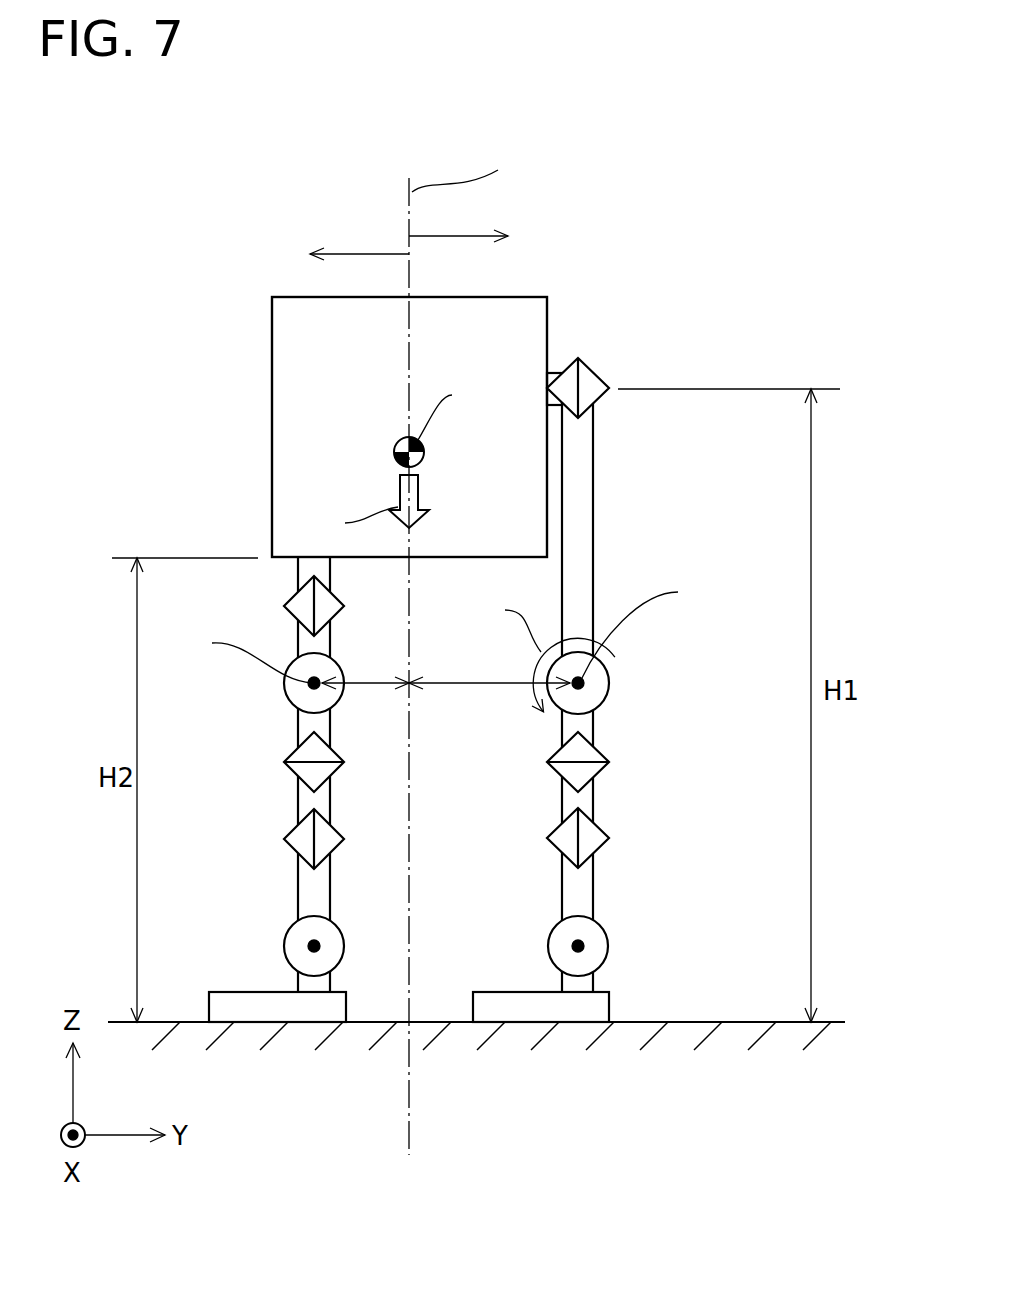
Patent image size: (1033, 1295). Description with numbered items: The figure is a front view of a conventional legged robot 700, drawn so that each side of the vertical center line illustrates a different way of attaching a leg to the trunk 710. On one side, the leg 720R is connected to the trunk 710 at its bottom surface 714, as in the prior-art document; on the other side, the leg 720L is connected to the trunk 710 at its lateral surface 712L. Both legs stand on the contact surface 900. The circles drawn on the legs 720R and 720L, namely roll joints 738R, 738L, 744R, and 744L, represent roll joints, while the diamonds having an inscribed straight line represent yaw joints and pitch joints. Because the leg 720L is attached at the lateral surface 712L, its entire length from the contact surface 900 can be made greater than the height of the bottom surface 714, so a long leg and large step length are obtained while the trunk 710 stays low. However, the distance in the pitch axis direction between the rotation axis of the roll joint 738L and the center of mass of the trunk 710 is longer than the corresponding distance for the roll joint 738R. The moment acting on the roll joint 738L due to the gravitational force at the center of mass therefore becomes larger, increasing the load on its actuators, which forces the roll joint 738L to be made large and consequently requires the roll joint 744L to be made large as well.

The legged robot 700 is at (433, 163).
The trunk 710 is at (547, 280).
The lateral surface 712L is at (548, 328).
The bottom surface 714 is at (282, 560).
The leg 720L is at (620, 530).
The leg 720R is at (290, 808).
The roll joint 738L is at (609, 681).
The roll joint 738R is at (286, 694).
The roll joint 744L is at (608, 944).
The roll joint 744R is at (286, 952).
The contact surface 900 is at (760, 1022).